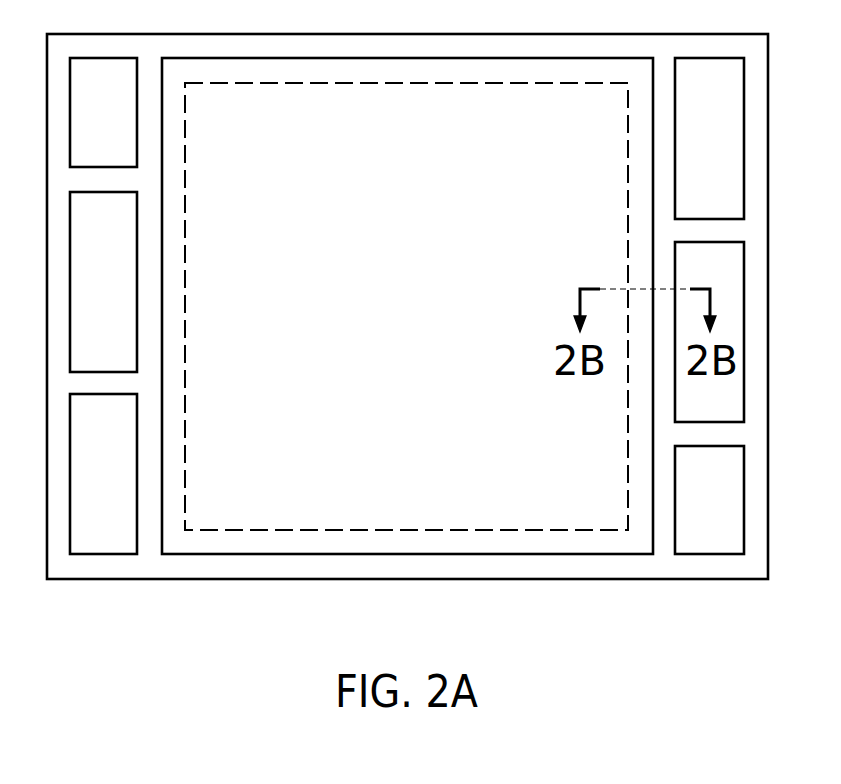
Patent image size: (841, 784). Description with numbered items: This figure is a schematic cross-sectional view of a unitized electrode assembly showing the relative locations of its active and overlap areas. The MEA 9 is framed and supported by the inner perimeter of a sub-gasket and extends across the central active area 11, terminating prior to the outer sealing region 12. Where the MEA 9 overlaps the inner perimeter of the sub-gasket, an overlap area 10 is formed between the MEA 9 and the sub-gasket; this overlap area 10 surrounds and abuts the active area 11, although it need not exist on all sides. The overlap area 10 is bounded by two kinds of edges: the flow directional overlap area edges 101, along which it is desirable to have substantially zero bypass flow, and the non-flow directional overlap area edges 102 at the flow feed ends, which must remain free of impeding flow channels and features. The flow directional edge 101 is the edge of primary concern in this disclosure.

The MEA 9 is at (350, 96).
The overlap area 10 is at (239, 71).
The active area 11 is at (598, 473).
The sealing region 12 is at (511, 573).
The flow directional overlap area edge 101 is at (503, 83).
The non-flow directional overlap area edge 102 is at (185, 296).